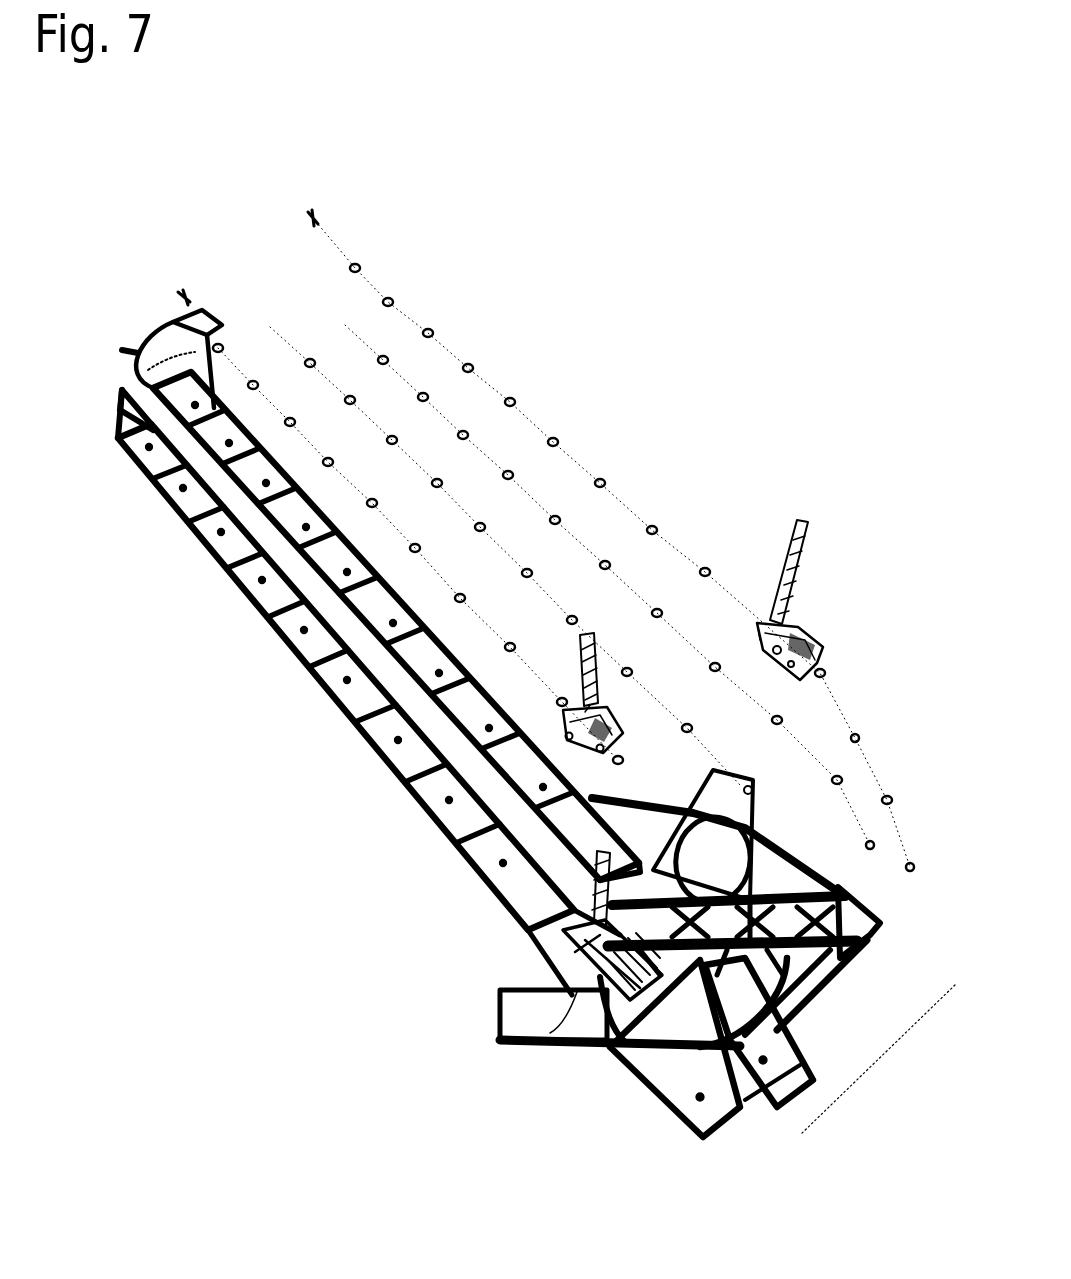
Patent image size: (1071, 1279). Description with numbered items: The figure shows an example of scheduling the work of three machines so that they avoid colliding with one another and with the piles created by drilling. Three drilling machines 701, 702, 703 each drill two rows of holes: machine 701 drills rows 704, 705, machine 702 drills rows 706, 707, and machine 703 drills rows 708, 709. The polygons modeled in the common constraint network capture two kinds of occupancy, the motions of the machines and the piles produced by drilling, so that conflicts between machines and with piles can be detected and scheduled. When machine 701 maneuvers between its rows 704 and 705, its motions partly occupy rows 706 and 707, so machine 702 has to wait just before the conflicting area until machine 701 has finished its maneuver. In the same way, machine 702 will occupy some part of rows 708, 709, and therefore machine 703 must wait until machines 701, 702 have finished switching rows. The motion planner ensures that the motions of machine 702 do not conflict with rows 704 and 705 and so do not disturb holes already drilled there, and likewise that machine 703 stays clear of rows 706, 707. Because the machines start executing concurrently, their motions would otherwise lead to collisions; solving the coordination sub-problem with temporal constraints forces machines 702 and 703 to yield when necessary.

The machine 701 is at (580, 990).
The machine 702 is at (605, 718).
The machine 703 is at (798, 630).
The row of holes 704 is at (365, 693).
The row of holes 705 is at (337, 565).
The row of holes 706 is at (272, 398).
The row of holes 707 is at (368, 418).
The row of holes 708 is at (493, 455).
The row of holes 709 is at (677, 547).